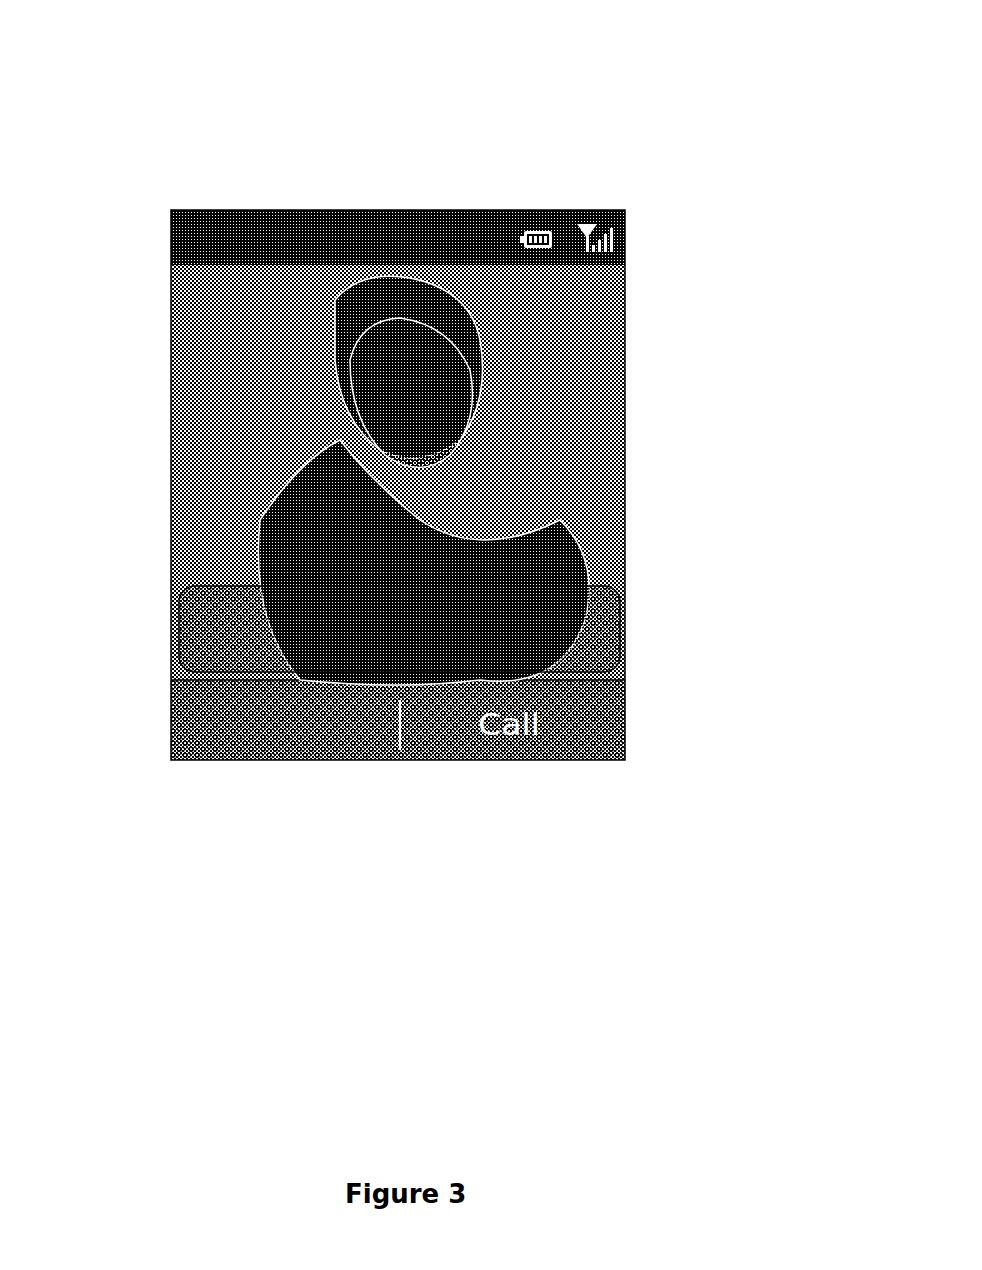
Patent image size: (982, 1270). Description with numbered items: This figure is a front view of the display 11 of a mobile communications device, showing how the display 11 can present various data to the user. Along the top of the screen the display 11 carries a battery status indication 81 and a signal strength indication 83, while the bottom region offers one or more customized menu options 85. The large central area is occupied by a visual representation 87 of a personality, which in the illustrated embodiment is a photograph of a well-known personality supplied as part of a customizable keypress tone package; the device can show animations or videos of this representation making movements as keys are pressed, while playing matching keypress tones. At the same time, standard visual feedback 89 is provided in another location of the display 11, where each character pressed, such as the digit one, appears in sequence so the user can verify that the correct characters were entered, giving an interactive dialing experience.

The display 11 is at (437, 100).
The battery status indication 81 is at (565, 210).
The signal strength indication 83 is at (626, 229).
The customized menu options 85 is at (275, 728).
The visual representation 87 is at (517, 392).
The standard visual feedback 89 is at (585, 630).